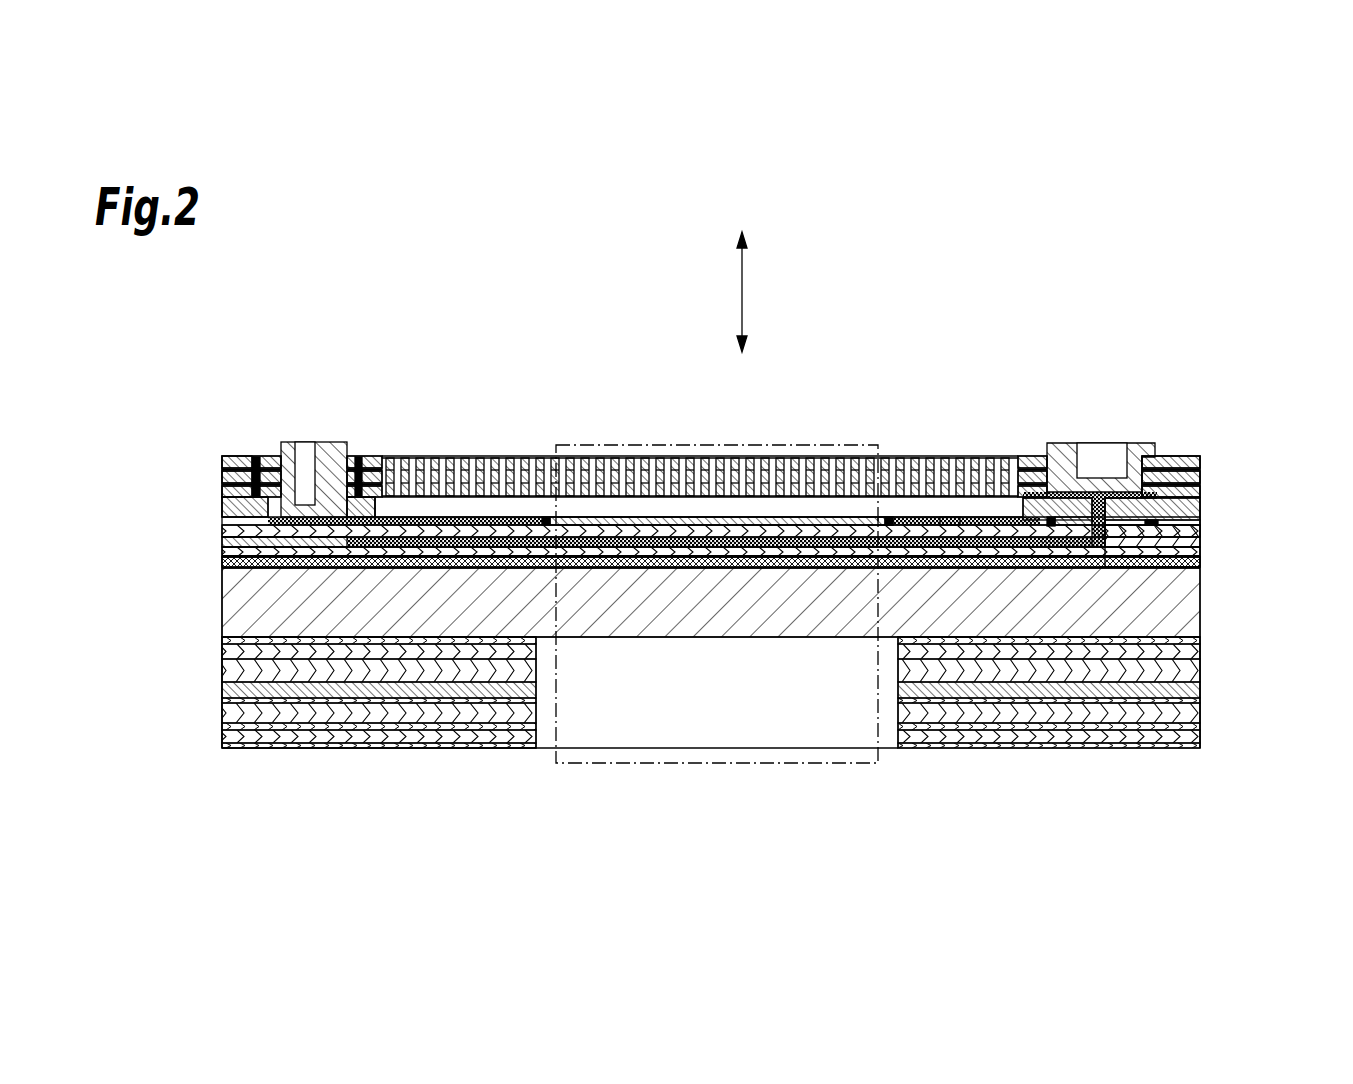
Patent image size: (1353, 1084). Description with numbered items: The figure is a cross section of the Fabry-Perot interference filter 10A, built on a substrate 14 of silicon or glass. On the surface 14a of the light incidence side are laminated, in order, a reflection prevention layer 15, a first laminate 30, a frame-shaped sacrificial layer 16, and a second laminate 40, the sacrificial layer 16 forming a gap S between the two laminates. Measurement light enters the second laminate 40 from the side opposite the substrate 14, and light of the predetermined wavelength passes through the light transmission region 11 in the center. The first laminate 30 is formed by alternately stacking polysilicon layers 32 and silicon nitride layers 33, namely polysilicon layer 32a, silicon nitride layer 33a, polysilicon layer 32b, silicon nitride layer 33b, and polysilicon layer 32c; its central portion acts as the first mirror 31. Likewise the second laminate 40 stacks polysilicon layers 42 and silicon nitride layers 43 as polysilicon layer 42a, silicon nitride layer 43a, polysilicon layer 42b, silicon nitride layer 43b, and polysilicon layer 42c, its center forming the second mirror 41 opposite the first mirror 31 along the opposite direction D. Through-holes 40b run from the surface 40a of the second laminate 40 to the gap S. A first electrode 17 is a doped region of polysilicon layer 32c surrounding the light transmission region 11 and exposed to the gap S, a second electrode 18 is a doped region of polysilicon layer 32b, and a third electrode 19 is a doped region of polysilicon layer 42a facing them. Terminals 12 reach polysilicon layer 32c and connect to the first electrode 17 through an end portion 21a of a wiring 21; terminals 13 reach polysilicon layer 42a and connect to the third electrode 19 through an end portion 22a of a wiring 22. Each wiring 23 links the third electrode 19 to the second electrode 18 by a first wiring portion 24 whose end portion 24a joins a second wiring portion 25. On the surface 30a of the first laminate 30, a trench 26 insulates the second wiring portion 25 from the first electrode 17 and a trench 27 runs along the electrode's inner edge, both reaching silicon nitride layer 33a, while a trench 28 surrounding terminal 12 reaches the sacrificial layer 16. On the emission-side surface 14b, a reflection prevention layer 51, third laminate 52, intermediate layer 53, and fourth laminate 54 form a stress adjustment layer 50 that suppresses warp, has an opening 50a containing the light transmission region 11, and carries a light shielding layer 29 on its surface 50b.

The Fabry-Perot interference filter 10A is at (1101, 296).
The opposite direction D is at (744, 295).
The light transmission region 11 is at (694, 763).
The terminal 12 is at (312, 442).
The terminal 13 is at (1088, 450).
The substrate 14 is at (673, 634).
The surface of light incidence side 14a is at (226, 560).
The surface of light emission side 14b is at (226, 652).
The reflection prevention layer 15 is at (1165, 567).
The sacrificial layer 16 is at (1173, 518).
The first electrode 17 is at (951, 520).
The second electrode 18 is at (430, 540).
The third electrode 19 is at (478, 486).
The wiring 21 is at (352, 520).
The end portion of wiring 21a is at (300, 520).
The wiring 22 is at (1042, 493).
The end portion of wiring 22a is at (1133, 493).
The wiring 23 is at (1104, 658).
The first wiring portion 24 is at (1060, 547).
The end portion of first wiring portion 24a is at (1103, 530).
The second wiring portion 25 is at (1125, 530).
The trench 26 is at (1152, 519).
The trench 27 is at (880, 513).
The trench 28 is at (256, 455).
The light shielding layer 29 is at (432, 745).
The first laminate 30 is at (1301, 470).
The surface of first laminate 30a is at (1202, 518).
The first mirror 31 is at (722, 568).
The polysilicon layer 32 is at (761, 544).
The polysilicon layer 32a is at (1203, 562).
The polysilicon layer 32b is at (1203, 535).
The polysilicon layer 32c is at (1203, 510).
The silicon nitride layer 33 is at (761, 545).
The silicon nitride layer 33a is at (1203, 552).
The silicon nitride layer 33b is at (1203, 522).
The second laminate 40 is at (636, 495).
The surface of second laminate 40a is at (234, 455).
The through-hole 40b is at (579, 474).
The second mirror 41 is at (696, 445).
The polysilicon layer 42 is at (655, 495).
The polysilicon layer 42a is at (224, 493).
The polysilicon layer 42b is at (224, 480).
The polysilicon layer 42c is at (224, 457).
The silicon nitride layer 43 is at (655, 499).
The silicon nitride layer 43a is at (224, 485).
The silicon nitride layer 43b is at (224, 469).
The stress adjustment layer 50 is at (760, 731).
The opening 50a is at (898, 706).
The surface of light emission side 50b is at (483, 745).
The reflection prevention layer 51 is at (1201, 641).
The third laminate 52 is at (1204, 647).
The intermediate layer 53 is at (1201, 690).
The fourth laminate 54 is at (1204, 698).
The gap S is at (996, 510).